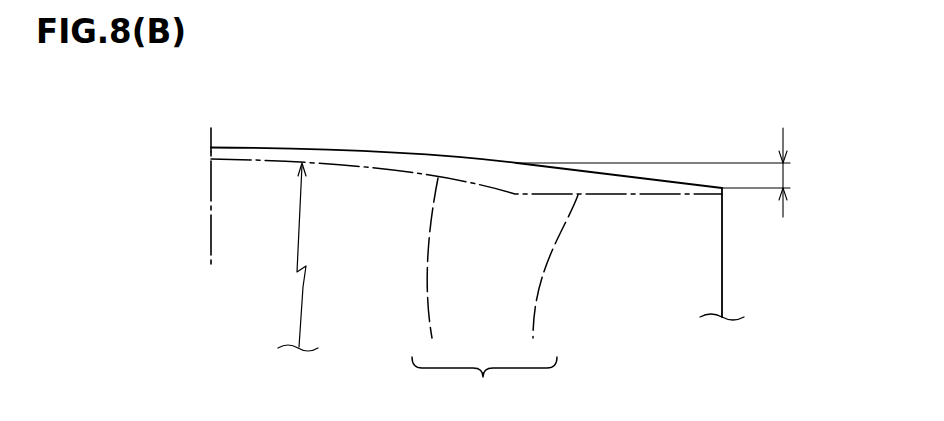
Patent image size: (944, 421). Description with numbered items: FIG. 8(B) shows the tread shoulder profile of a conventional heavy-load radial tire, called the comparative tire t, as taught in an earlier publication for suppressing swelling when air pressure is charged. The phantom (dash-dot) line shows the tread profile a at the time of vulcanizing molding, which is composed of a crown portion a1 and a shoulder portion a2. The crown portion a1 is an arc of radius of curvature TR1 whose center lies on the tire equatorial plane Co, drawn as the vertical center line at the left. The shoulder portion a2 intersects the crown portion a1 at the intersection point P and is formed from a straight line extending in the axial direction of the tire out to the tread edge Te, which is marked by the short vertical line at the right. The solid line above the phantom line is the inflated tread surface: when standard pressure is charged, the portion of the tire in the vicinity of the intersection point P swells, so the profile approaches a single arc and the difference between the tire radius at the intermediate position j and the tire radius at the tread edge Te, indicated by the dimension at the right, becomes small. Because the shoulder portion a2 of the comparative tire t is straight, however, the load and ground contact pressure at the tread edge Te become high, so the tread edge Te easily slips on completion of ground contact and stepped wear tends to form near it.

The tire equatorial plane Co is at (211, 184).
The comparative tire t is at (381, 125).
The intermediate position j is at (557, 148).
The tread edge Te is at (728, 192).
The radius of curvature TR1 is at (302, 298).
The intersection point P is at (515, 197).
The crown portion a1 is at (434, 271).
The shoulder portion a2 is at (548, 279).
The tread profile a is at (484, 380).